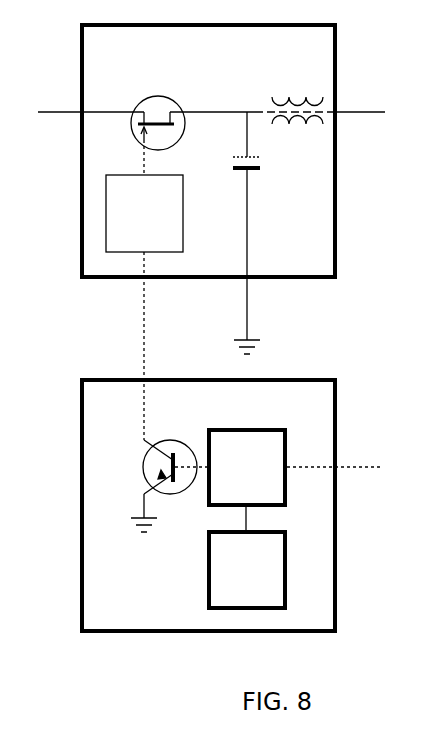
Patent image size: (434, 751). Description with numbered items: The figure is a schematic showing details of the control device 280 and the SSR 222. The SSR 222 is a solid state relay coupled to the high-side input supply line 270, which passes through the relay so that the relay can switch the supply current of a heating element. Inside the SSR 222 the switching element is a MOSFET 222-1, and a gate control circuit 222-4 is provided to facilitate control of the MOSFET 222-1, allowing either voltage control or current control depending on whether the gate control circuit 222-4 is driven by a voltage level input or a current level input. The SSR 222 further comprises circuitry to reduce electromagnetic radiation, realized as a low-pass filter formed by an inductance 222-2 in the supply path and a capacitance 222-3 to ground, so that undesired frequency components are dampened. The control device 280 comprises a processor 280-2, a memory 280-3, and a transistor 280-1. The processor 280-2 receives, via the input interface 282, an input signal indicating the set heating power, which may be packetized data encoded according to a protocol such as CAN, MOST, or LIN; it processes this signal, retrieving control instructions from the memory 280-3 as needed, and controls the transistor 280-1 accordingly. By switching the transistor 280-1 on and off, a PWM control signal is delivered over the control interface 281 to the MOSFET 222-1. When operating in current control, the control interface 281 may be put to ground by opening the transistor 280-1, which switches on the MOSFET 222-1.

The SSR 222 is at (80, 48).
The input supply line 270 is at (44, 112).
The MOSFET 222-1 is at (141, 107).
The inductance 222-2 is at (273, 103).
The capacitance 222-3 is at (233, 163).
The gate control circuit 222-4 is at (184, 204).
The control interface 281 is at (144, 316).
The control device 280 is at (80, 408).
The transistor 280-1 is at (143, 470).
The processor 280-2 is at (261, 428).
The memory 280-3 is at (207, 598).
The input interface 282 is at (369, 467).